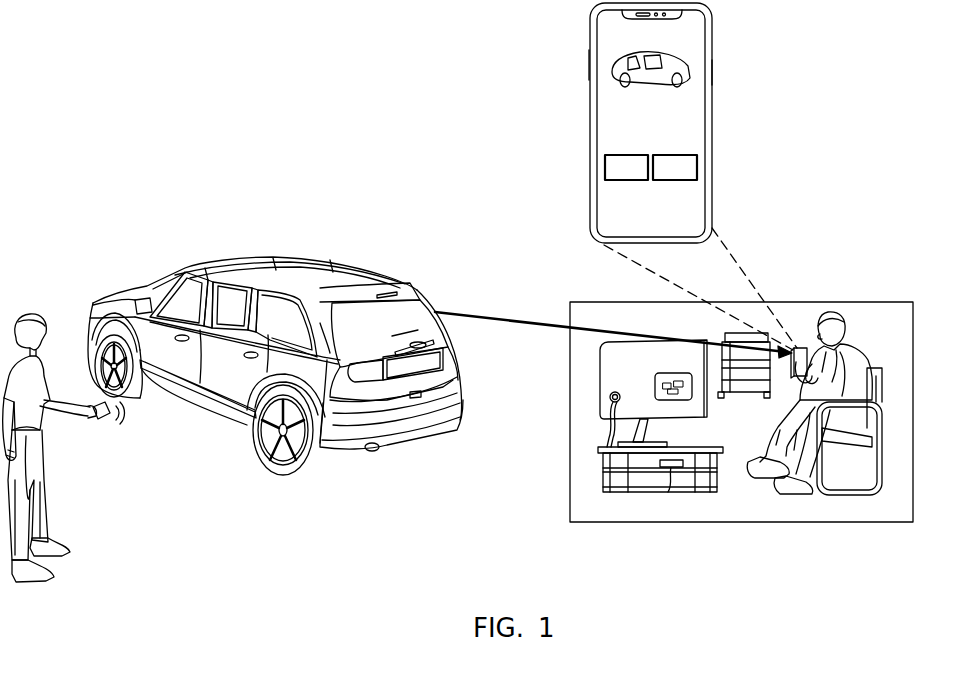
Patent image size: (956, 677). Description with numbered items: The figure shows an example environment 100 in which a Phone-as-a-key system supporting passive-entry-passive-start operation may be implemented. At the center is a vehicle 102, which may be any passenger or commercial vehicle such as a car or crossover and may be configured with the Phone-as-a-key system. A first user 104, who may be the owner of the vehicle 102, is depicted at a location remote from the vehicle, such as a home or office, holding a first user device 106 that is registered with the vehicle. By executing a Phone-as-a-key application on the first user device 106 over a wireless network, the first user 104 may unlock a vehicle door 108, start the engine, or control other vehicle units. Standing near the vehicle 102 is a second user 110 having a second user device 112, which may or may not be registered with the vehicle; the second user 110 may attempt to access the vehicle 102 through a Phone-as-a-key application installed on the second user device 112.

The environment 100 is at (168, 58).
The vehicle 102 is at (338, 262).
The first user 104 is at (840, 312).
The first user device 106 is at (590, 111).
The vehicle door 108 is at (180, 378).
The second user 110 is at (28, 304).
The second user device 112 is at (98, 420).